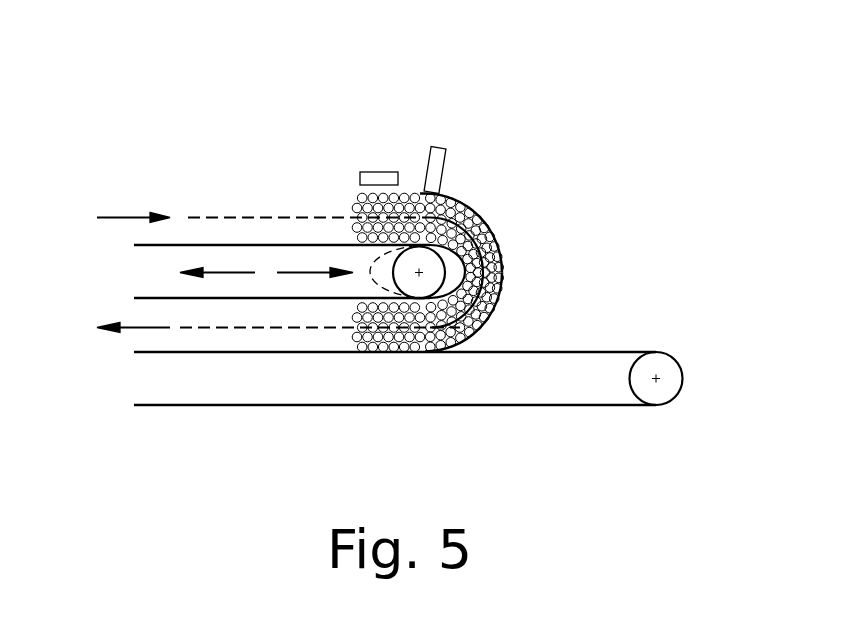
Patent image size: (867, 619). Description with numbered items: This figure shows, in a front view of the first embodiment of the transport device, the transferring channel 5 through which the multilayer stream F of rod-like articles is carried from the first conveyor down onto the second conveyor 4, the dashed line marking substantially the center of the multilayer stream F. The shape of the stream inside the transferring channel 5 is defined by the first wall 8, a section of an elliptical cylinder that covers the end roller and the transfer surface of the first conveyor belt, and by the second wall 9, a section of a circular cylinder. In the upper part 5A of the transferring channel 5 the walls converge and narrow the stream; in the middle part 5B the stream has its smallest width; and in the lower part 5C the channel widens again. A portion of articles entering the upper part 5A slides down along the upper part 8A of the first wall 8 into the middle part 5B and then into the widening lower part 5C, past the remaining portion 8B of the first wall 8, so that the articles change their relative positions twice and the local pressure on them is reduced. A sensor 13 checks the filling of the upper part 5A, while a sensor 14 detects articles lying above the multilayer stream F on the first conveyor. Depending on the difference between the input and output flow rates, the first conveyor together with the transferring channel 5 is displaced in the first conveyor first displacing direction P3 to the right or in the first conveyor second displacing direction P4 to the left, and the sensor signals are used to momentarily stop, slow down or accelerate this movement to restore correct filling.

The multilayer stream F is at (223, 217).
The second conveyor 4 is at (632, 351).
The transferring channel 5 is at (505, 187).
The upper part of the transferring channel 5A is at (443, 195).
The middle part of the transferring channel 5B is at (502, 265).
The lower part of the transferring channel 5C is at (447, 352).
The first wall 8 is at (502, 278).
The upper part of the first wall 8A is at (465, 205).
The lower ball layer 8B is at (490, 315).
The second wall 9 is at (495, 245).
The sensor 13 is at (433, 155).
The sensor 14 is at (372, 177).
The first conveyor first displacing direction P3 is at (310, 272).
The first conveyor second displacing direction P4 is at (227, 272).